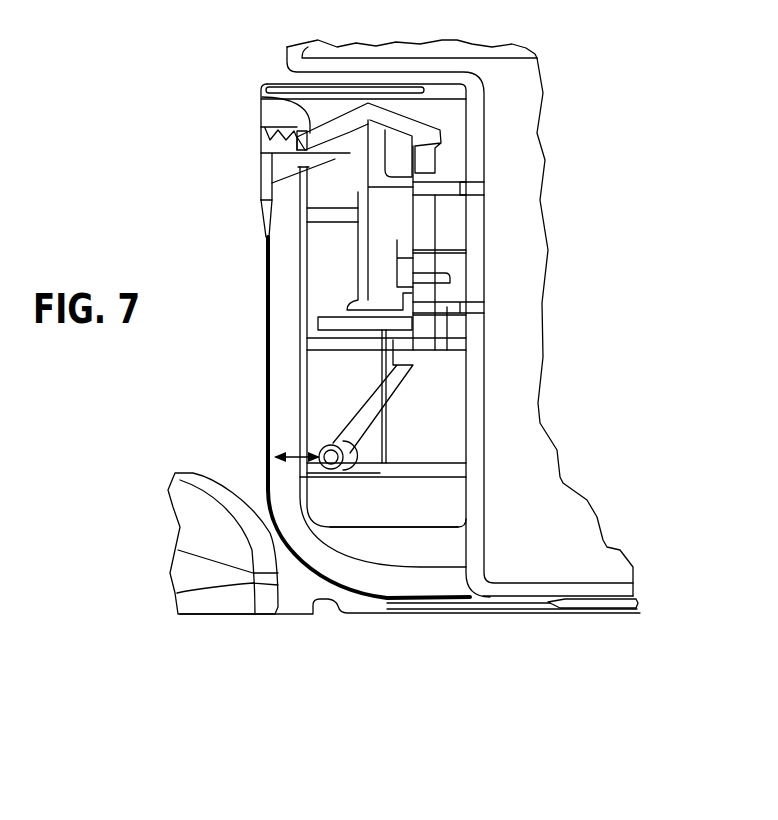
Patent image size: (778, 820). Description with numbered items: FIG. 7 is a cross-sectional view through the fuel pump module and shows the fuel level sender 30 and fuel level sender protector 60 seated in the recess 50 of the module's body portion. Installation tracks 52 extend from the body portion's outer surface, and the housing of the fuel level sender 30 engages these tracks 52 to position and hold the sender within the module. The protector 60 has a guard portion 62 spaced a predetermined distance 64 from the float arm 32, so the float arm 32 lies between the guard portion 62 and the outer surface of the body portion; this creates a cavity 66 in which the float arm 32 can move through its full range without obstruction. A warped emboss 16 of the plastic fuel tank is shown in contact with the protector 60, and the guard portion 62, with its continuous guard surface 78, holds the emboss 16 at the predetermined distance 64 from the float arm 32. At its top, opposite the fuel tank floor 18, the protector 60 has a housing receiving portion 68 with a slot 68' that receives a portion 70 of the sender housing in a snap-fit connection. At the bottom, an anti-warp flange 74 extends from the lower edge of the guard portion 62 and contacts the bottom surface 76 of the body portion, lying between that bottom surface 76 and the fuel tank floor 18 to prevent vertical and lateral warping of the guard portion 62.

The recess 50 is at (432, 78).
The portion of the housing 70 is at (262, 97).
The housing receiving portion 68 is at (246, 148).
The slot 68' is at (268, 166).
The fuel level sender protector 60 is at (250, 301).
The guard portion 62 is at (267, 333).
The guard surface 78 is at (267, 350).
The predetermined distance 64 is at (293, 455).
The emboss 16 is at (200, 520).
The fuel tank floor 18 is at (318, 602).
The fuel level sender 30 is at (498, 248).
The installation tracks 52 is at (477, 192).
The float arm 32 is at (363, 432).
The cavity 66 is at (420, 494).
The anti-warp flange 74 is at (512, 603).
The bottom surface 76 is at (610, 603).